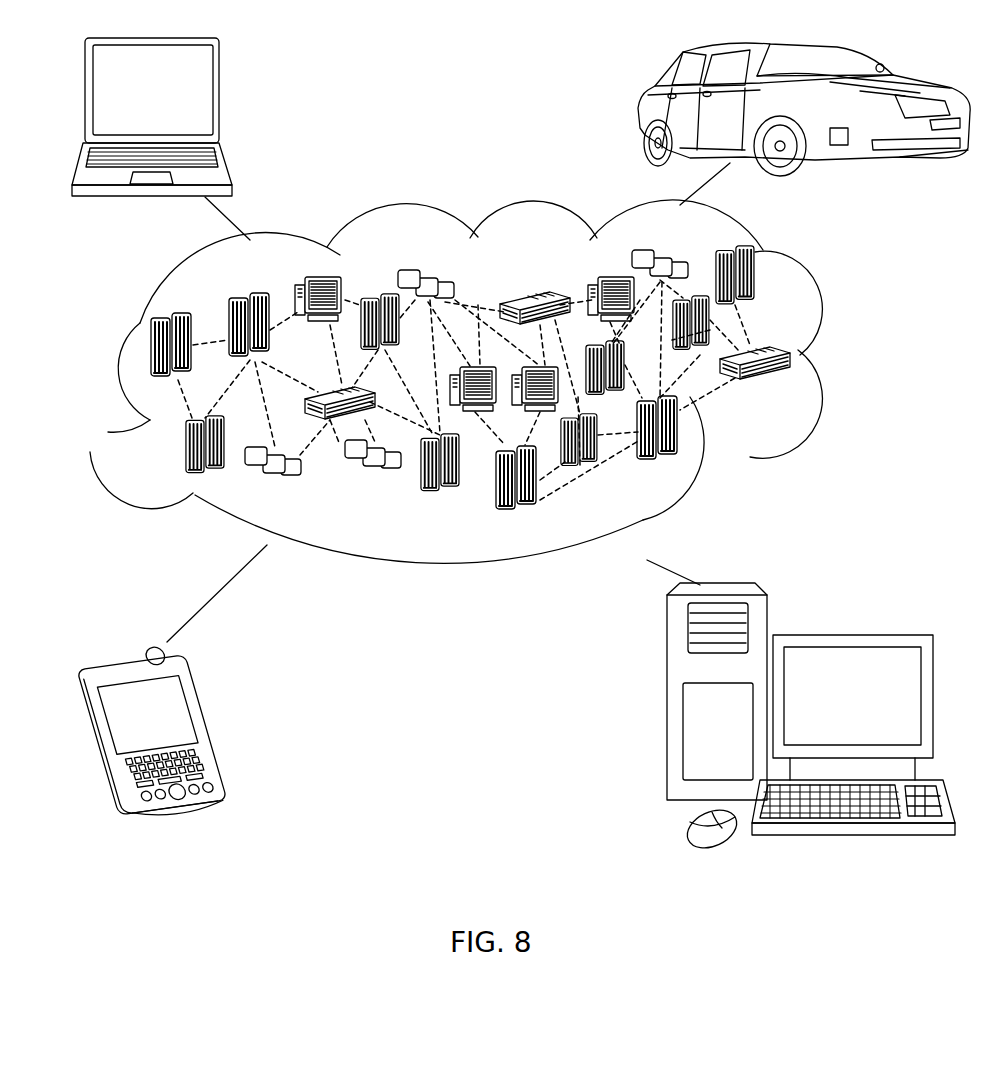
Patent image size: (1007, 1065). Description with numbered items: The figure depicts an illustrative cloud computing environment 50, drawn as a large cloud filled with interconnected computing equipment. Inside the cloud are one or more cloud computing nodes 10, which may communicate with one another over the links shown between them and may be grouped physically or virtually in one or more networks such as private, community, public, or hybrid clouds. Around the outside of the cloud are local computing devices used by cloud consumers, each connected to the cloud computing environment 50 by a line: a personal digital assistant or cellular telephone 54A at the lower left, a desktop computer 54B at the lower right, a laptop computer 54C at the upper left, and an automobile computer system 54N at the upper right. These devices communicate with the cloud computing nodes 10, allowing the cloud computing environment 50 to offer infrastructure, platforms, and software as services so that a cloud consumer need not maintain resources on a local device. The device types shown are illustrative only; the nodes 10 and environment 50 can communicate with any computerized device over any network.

The cloud computing node 10 is at (800, 389).
The cloud computing environment 50 is at (858, 352).
The personal digital assistant or cellular telephone 54A is at (210, 727).
The desktop computer 54B is at (853, 633).
The laptop computer 54C is at (220, 97).
The automobile computer system 54N is at (640, 113).